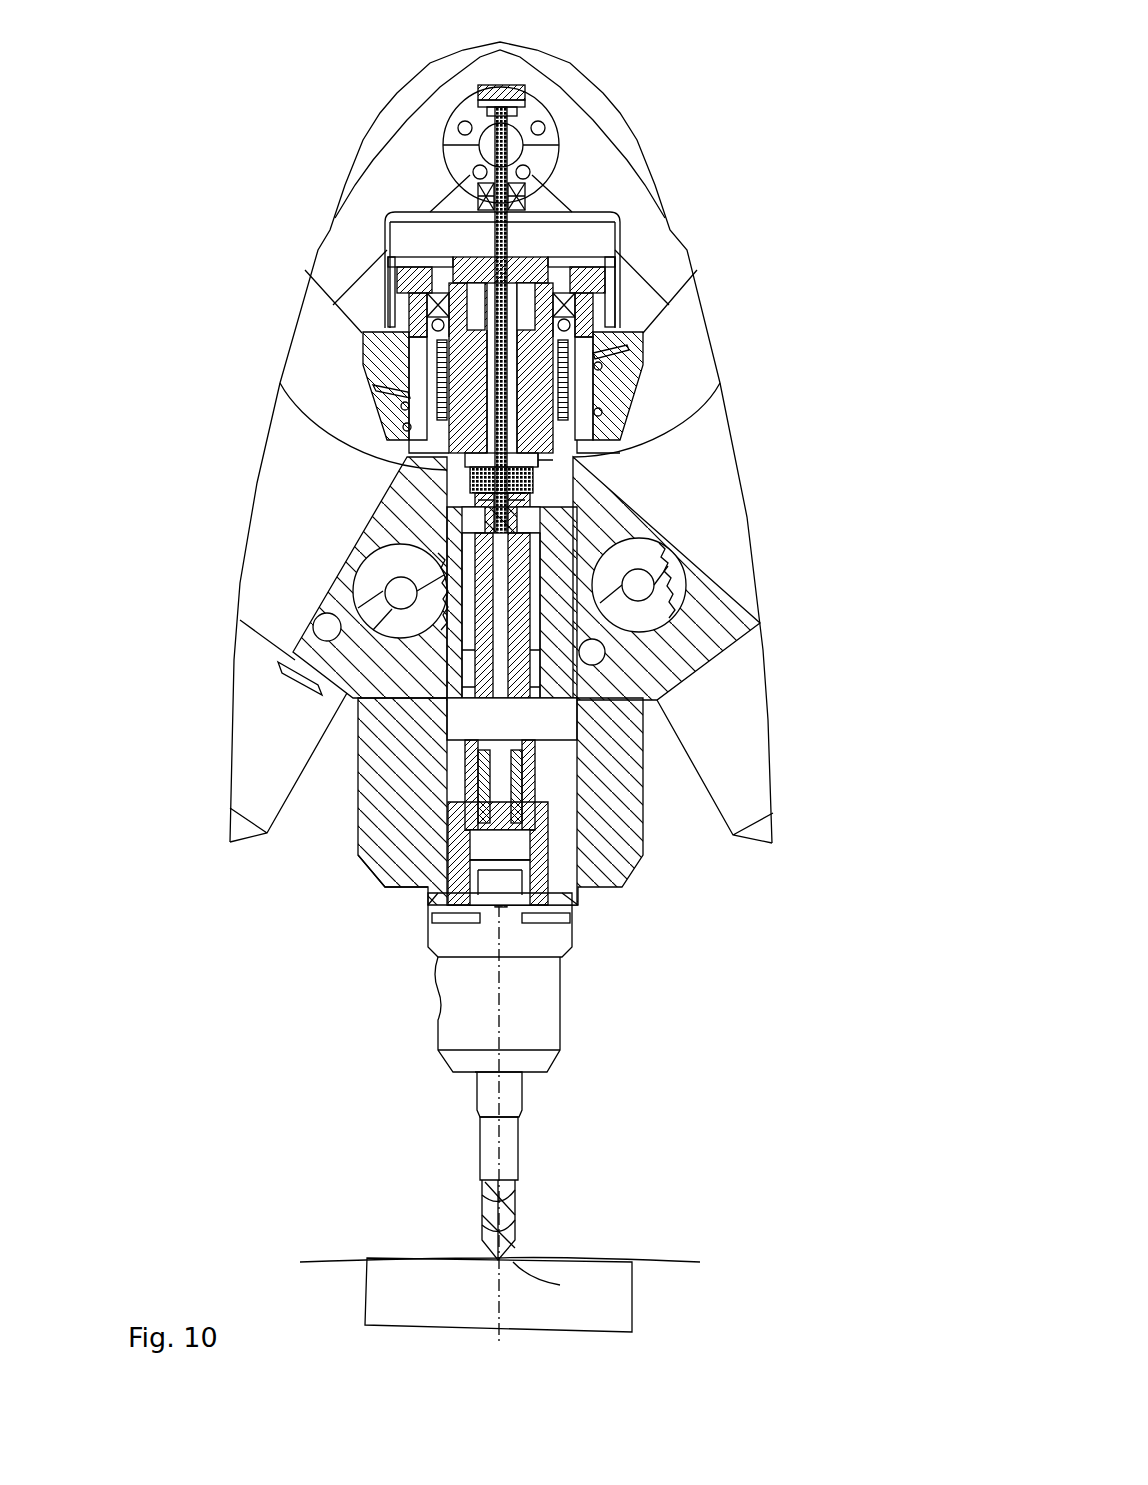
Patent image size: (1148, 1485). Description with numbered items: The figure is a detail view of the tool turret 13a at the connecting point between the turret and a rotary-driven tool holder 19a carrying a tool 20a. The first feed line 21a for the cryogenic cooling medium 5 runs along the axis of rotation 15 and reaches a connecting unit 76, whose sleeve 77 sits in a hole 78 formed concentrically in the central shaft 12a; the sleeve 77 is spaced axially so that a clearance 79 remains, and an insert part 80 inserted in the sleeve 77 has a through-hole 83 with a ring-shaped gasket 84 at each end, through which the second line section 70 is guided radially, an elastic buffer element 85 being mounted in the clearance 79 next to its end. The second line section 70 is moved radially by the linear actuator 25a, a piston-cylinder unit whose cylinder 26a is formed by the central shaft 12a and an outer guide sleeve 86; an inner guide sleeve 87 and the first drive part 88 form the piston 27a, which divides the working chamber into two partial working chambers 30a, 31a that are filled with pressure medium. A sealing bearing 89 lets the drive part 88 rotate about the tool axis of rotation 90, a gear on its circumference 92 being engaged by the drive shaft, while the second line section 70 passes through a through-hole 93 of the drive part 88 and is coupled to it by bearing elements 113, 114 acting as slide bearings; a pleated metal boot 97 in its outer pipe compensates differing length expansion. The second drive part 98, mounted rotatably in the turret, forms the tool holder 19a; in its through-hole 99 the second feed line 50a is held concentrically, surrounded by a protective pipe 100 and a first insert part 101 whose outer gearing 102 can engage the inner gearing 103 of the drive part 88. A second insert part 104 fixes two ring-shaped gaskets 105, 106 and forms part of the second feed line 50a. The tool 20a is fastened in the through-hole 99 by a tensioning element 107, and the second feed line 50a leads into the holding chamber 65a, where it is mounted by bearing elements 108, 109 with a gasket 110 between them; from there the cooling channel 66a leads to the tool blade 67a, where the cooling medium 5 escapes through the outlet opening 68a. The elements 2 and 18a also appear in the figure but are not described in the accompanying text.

The workpiece 2 is at (605, 1310).
The cryogenic cooling medium 5 is at (513, 230).
The central shaft 12a is at (560, 150).
The tool turret 13a is at (717, 473).
The axis of rotation 15 is at (603, 120).
The pivot arm 18a is at (360, 712).
The tool holder 19a is at (345, 817).
The tool 20a is at (547, 1023).
The first feed line 21a is at (625, 249).
The linear actuator 25a is at (640, 403).
The cylinder 26a is at (630, 425).
The piston 27a is at (580, 458).
The partial working chamber 30a is at (612, 250).
The partial working chamber 31a is at (582, 448).
The second feed line 50a is at (518, 660).
The holding chamber 65a is at (560, 864).
The cooling channel 66a is at (503, 1008).
The tool blade 67a is at (560, 1285).
The outlet opening 68a is at (513, 1250).
The second line section 70 is at (513, 242).
The connecting unit 76 is at (480, 118).
The sleeve 77 is at (473, 168).
The hole 78 is at (445, 152).
The clearance 79 is at (525, 100).
The insert part 80 is at (462, 167).
The through-hole 83 is at (441, 130).
The ring-shaped gasket 84 is at (478, 193).
The elastic buffer element 85 is at (520, 85).
The outer guide sleeve 86 is at (363, 377).
The inner guide sleeve 87 is at (380, 403).
The first drive part 88 is at (465, 452).
The sealing bearing 89 is at (392, 330).
The tool axis of rotation 90 is at (495, 1308).
The circumference 92 is at (578, 300).
The through-hole 93 is at (600, 348).
The pleated metal boot 97 is at (440, 355).
The second drive part 98 is at (365, 745).
The through-hole 99 is at (447, 727).
The protective pipe 100 is at (580, 697).
The first insert part 101 is at (535, 505).
The outer gearing 102 is at (447, 505).
The inner gearing 103 is at (470, 473).
The second insert part 104 is at (548, 482).
The ring-shaped gasket 105 is at (475, 497).
The ring-shaped gasket 106 is at (438, 538).
The tensioning element 107 is at (520, 792).
The bearing element 108 is at (575, 892).
The bearing element 109 is at (440, 887).
The gasket 110 is at (430, 905).
The bearing element 113 is at (605, 285).
The bearing element 114 is at (548, 470).